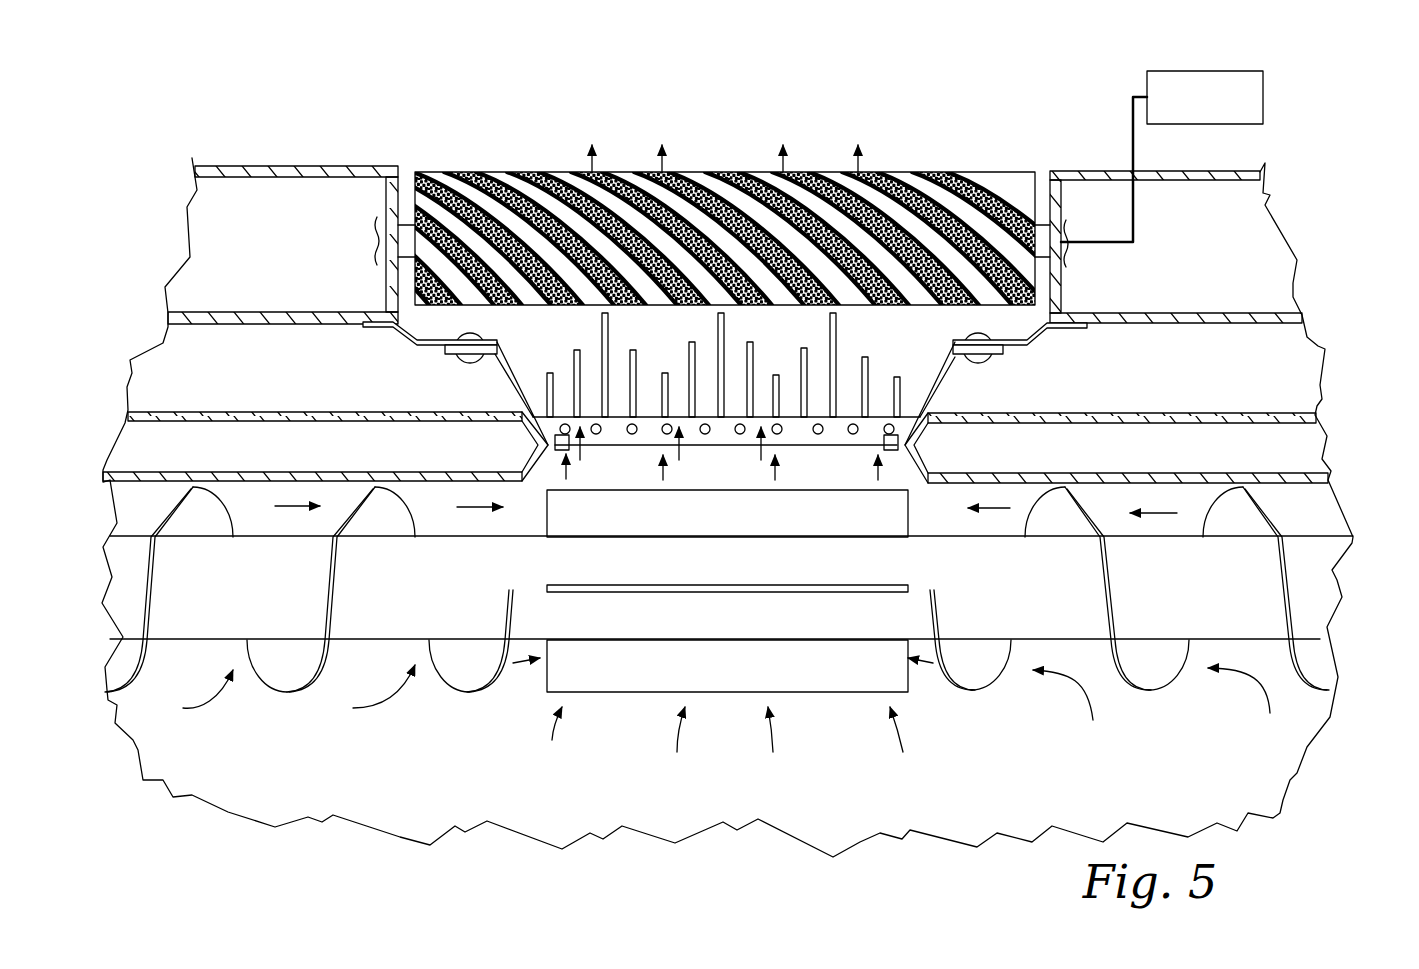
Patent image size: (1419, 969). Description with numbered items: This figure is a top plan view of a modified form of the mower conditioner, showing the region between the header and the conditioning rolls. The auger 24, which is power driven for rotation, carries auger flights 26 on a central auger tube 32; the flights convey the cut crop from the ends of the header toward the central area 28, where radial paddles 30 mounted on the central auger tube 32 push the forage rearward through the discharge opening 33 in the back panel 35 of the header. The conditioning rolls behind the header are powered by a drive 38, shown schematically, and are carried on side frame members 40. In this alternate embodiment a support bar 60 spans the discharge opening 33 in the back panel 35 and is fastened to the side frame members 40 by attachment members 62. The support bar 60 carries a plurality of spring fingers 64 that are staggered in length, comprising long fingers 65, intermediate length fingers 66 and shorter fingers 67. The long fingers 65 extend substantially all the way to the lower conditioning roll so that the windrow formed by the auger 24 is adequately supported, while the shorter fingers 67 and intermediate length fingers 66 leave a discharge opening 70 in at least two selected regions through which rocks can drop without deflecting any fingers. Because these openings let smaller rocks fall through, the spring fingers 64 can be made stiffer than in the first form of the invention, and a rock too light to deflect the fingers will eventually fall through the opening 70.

The auger 24 is at (1308, 547).
The auger flights 26 is at (1155, 677).
The central area 28 is at (608, 693).
The radial paddles 30 is at (805, 677).
The central auger tube 32 is at (1312, 562).
The discharge opening 33 is at (712, 463).
The back panel 35 is at (242, 409).
The drive 38 is at (1150, 72).
The side frame members 40 is at (308, 324).
The support bar 60 is at (797, 436).
The attachment members 62 is at (413, 350).
The spring fingers 64 is at (548, 352).
The long fingers 65 is at (719, 316).
The intermediate length fingers 66 is at (576, 350).
The shorter fingers 67 is at (897, 377).
The discharge opening 70 is at (693, 317).